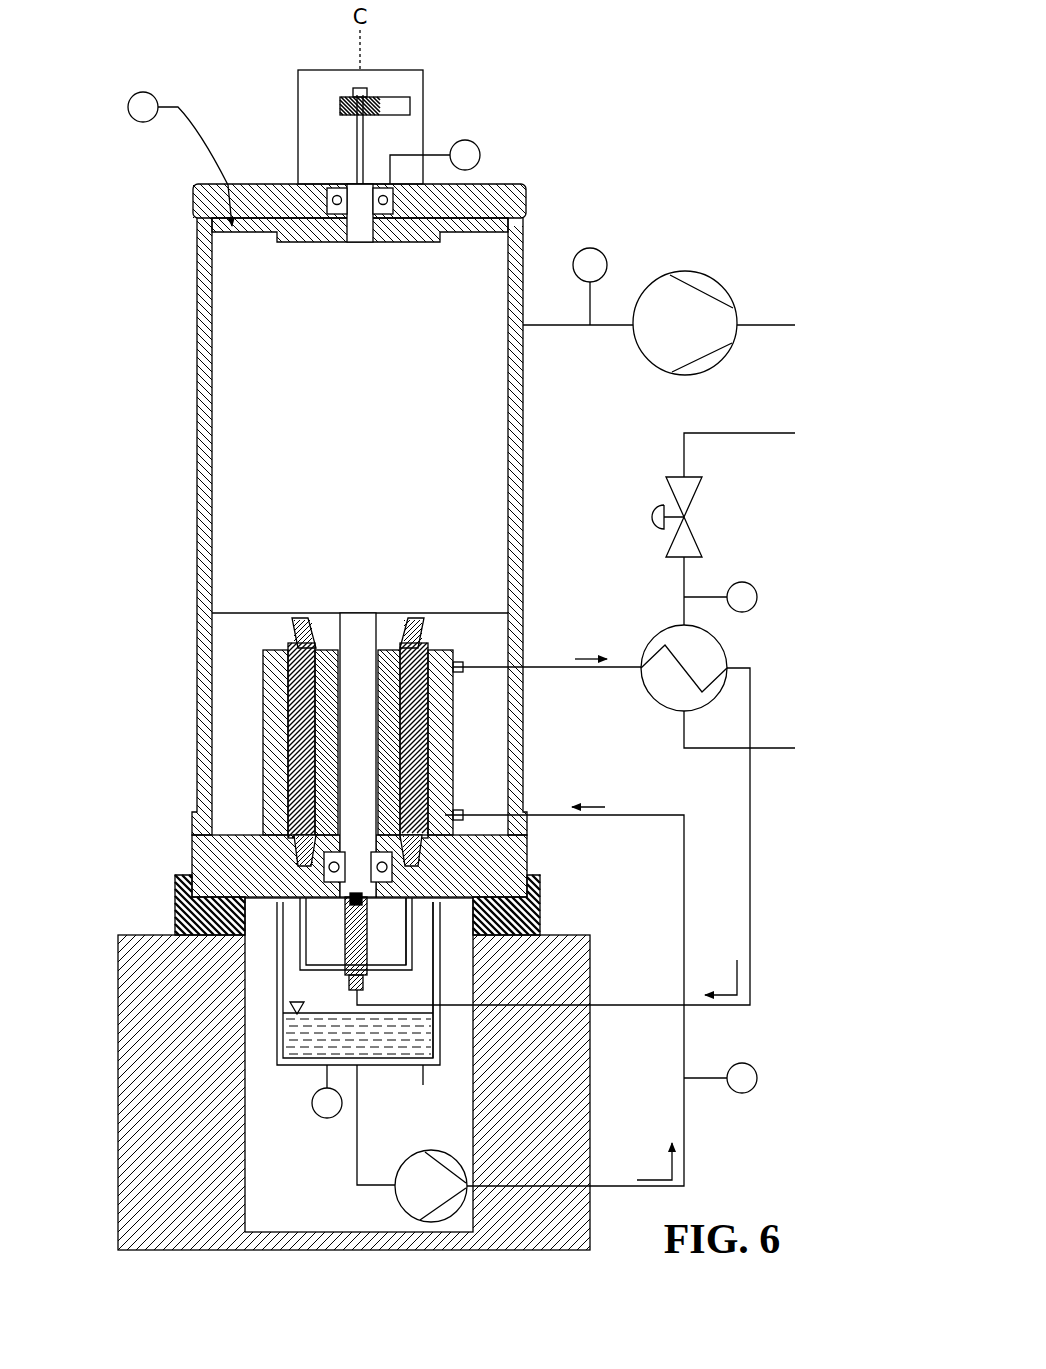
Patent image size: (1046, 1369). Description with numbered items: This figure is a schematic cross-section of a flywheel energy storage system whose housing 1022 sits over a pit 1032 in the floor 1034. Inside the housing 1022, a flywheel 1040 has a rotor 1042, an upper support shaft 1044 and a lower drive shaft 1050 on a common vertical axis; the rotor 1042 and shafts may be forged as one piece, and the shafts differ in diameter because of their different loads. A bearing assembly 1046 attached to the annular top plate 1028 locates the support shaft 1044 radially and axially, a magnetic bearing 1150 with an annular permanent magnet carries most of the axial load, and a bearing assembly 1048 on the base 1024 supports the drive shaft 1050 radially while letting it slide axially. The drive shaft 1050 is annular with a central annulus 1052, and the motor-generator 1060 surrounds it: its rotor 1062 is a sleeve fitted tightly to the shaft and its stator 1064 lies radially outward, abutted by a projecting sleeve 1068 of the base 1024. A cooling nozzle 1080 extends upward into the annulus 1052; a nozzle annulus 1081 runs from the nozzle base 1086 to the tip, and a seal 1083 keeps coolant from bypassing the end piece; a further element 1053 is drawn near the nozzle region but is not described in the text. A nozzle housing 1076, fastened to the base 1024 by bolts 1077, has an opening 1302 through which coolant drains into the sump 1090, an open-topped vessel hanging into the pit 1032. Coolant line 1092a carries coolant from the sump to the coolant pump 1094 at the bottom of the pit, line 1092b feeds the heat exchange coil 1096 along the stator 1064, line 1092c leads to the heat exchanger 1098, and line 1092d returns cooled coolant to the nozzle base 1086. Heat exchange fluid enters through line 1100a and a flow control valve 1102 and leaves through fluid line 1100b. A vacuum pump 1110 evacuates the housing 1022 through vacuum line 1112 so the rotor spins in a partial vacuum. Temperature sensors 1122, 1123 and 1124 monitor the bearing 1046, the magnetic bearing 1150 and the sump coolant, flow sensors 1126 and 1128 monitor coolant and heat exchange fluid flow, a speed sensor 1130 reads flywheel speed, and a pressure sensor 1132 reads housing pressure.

The speed sensor 1130 is at (382, 92).
The upper support shaft 1044 is at (356, 184).
The bearing assembly 1046 is at (336, 192).
The temperature sensor 1122 is at (474, 143).
The temperature sensor 1123 is at (128, 107).
The annular top plate 1028 is at (212, 186).
The magnetic bearing 1150 is at (490, 218).
The housing 1022 is at (197, 270).
The flywheel 1040 is at (200, 382).
The rotor 1042 is at (346, 443).
The pressure sensor 1132 is at (590, 248).
The vacuum pump 1110 is at (684, 271).
The vacuum line 1112 is at (556, 335).
The heat exchange fluid line 1100a is at (790, 433).
The flow control valve 1102 is at (702, 497).
The flow sensor 1128 is at (757, 597).
The heat exchanger 1098 is at (672, 626).
The coolant line 1092c is at (558, 652).
The lower drive shaft 1050 is at (358, 612).
The central annulus 1052 is at (265, 655).
The motor-generator 1060 is at (282, 705).
The rotor 1062 is at (290, 775).
The heat exchange coil 1096 is at (460, 697).
The projecting sleeve 1068 is at (458, 742).
The stator 1064 is at (440, 748).
The fluid line 1100b is at (770, 748).
The coolant line 1092d is at (752, 830).
The bearing assembly 1048 is at (330, 885).
The base 1024 is at (530, 852).
The floor 1034 is at (148, 937).
The cup 1053 is at (303, 930).
The seal 1083 is at (338, 985).
The nozzle base 1086 is at (285, 1020).
The nozzle annulus 1081 is at (367, 935).
The cooling nozzle 1080 is at (362, 975).
The nozzle housing 1076 is at (412, 925).
The bolts 1077 is at (437, 925).
The sump 1090 is at (295, 1066).
The opening 1302 is at (422, 1087).
The temperature sensor 1124 is at (327, 1118).
The flow sensor 1126 is at (757, 1078).
The coolant line 1092a is at (362, 1160).
The coolant line 1092b is at (578, 1185).
The pit 1032 is at (258, 1203).
The coolant pump 1094 is at (397, 1200).